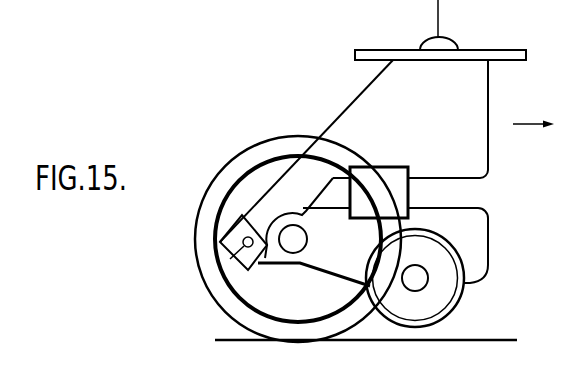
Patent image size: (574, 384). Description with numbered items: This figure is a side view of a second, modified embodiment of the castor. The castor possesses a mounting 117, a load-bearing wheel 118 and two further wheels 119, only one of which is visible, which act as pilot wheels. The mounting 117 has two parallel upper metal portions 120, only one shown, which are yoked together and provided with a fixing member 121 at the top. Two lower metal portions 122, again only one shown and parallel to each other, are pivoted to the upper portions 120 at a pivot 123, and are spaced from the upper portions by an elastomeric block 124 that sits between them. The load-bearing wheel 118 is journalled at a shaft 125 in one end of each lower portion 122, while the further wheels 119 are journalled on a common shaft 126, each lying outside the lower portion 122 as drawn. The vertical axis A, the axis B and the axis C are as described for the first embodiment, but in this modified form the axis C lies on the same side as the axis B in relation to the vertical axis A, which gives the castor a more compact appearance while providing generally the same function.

The mounting 117 is at (340, 105).
The load-bearing wheel 118 is at (200, 238).
The further wheels 119 is at (440, 252).
The upper metal portions 120 is at (477, 107).
The fixing member 121 is at (431, 45).
The lower metal portions 122 is at (478, 227).
The pivot 123 is at (221, 265).
The elastomeric block 124 is at (393, 193).
The shaft 125 is at (288, 226).
The common shaft 126 is at (418, 285).
The vertical axis A is at (446, 13).
The axis B is at (284, 236).
The axis C is at (427, 279).